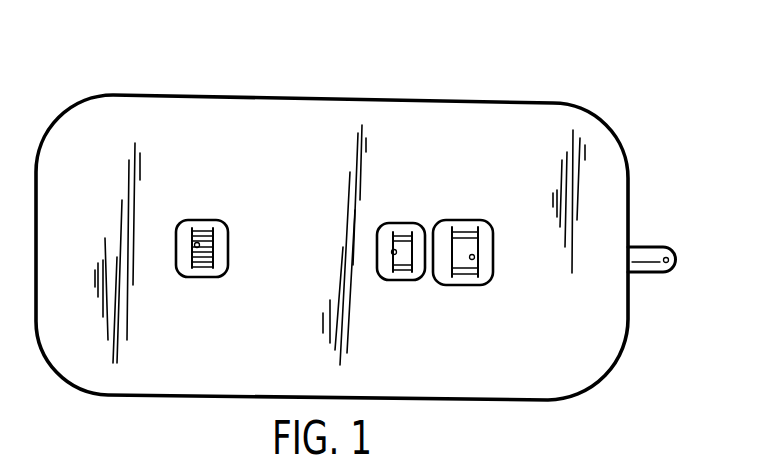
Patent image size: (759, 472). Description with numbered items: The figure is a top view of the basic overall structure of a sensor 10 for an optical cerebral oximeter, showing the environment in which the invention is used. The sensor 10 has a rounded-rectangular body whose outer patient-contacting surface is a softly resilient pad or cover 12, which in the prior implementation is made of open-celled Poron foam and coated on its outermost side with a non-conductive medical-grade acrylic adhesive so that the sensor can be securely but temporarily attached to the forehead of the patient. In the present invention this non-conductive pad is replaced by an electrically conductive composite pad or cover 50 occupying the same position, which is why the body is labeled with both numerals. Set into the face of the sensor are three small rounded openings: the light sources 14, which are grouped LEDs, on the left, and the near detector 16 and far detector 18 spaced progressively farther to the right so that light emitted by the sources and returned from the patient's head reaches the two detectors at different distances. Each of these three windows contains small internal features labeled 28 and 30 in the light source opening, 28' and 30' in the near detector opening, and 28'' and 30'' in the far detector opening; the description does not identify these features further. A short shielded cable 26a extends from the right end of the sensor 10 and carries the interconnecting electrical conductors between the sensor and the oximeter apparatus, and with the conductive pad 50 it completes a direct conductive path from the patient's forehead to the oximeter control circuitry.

The sensor 10 is at (622, 107).
The outer patient-contacting pad or cover 12 is at (393, 247).
The outer pad or cover 50 is at (610, 173).
The light sources 14 is at (223, 235).
The near detector 16 is at (357, 252).
The far detector 18 is at (492, 247).
The shielded cable 26a is at (652, 242).
The sensor element of first sensor 28 is at (187, 206).
The detector of first sensor 30 is at (182, 295).
The sensor element of second sensor 28' is at (402, 300).
The detector of second sensor 30' is at (335, 267).
The sensor element of third sensor 28'' is at (476, 300).
The detector of third sensor 30'' is at (511, 254).